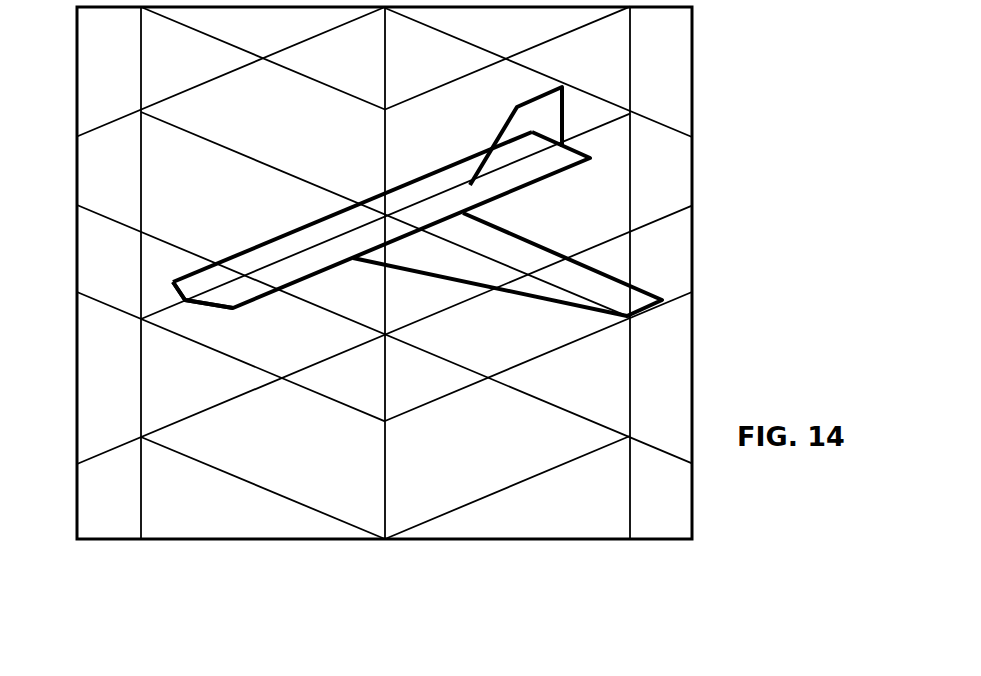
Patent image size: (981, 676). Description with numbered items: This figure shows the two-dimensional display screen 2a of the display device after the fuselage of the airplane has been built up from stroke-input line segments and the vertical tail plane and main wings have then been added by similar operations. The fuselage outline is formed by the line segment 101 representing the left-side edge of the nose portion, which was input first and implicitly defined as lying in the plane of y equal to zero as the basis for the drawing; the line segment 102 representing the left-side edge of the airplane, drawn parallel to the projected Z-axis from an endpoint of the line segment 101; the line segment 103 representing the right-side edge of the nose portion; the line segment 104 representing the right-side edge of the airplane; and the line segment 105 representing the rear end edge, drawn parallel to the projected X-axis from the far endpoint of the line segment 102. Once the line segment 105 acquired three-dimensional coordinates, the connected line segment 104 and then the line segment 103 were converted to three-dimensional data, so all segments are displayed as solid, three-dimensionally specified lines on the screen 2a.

The 2D display screen 2a is at (533, 541).
The line segment representing the left-side edge of the nose portion 101 is at (193, 303).
The line segment representing the left-side edge of the airplane 102 is at (508, 194).
The line segment representing the right-side edge of the nose portion 103 is at (172, 293).
The line segment representing the right-side edge of the airplane 104 is at (450, 165).
The line segment representing the rear end edge of the airplane 105 is at (588, 134).